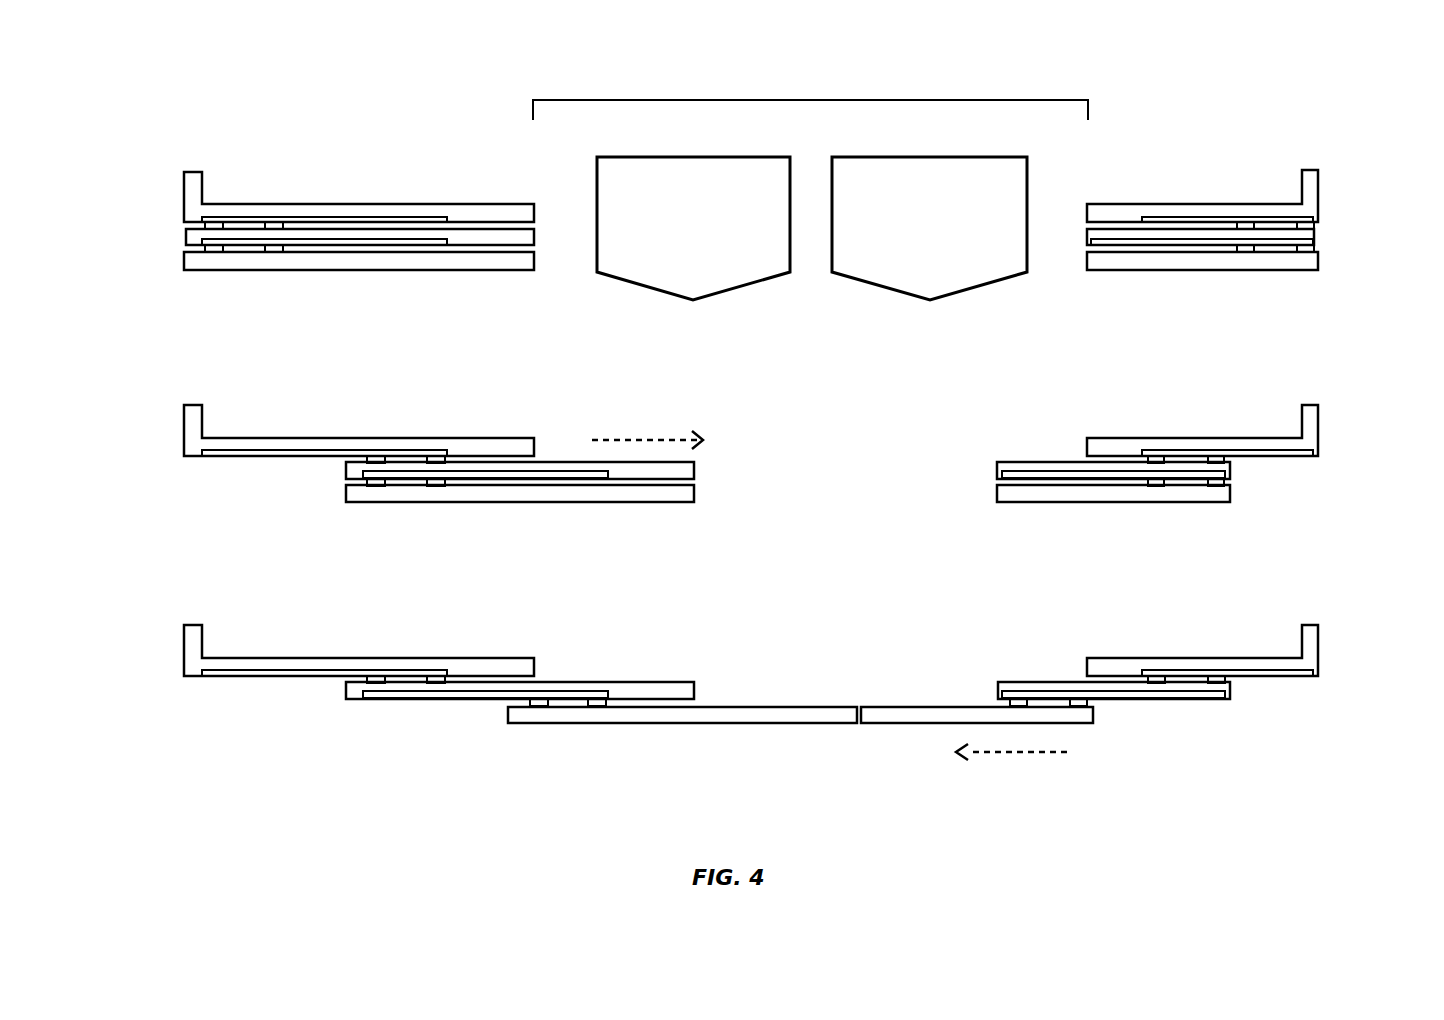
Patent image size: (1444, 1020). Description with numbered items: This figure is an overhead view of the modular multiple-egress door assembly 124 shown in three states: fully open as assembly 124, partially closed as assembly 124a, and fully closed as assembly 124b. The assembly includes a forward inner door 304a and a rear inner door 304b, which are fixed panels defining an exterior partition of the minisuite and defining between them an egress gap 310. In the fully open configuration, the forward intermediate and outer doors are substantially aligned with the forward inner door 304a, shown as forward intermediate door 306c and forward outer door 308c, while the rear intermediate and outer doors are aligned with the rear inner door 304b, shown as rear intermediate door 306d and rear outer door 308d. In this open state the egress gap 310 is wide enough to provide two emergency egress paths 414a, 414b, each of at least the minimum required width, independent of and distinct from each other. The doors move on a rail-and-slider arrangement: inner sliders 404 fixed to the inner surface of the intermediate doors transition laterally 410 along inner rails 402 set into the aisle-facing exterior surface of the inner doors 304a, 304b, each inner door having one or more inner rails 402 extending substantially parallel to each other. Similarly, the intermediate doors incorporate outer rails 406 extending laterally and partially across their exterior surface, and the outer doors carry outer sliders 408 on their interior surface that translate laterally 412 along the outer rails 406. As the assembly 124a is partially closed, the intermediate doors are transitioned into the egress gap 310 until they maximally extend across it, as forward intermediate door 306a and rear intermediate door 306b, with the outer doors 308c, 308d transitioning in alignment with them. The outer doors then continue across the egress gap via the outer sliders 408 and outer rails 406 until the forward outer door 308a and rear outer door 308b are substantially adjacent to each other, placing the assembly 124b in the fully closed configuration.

The modular multiple-egress door assembly 124 is at (125, 95).
The modular multiple-egress door assembly (partially closed) 124a is at (132, 384).
The modular multiple-egress door assembly (fully closed) 124b is at (132, 571).
The forward inner door 304a is at (257, 210).
The rear inner door 304b is at (1308, 208).
The forward intermediate door 306a is at (358, 469).
The rear intermediate door 306b is at (1222, 467).
The forward intermediate door (open position) 306c is at (193, 237).
The rear intermediate door (open position) 306d is at (1312, 235).
The forward outer door 308a is at (737, 715).
The rear outer door 308b is at (892, 715).
The forward outer door (open position) 308c is at (255, 260).
The rear outer door (open position) 308d is at (1285, 263).
The egress gap 310 is at (793, 100).
The inner rails 402 is at (298, 220).
The inner sliders 404 is at (1303, 220).
The outer rails 406 is at (358, 241).
The outer sliders 408 is at (1245, 247).
The lateral transition of inner sliders 410 is at (655, 438).
The lateral translation of outer sliders 412 is at (1000, 755).
The first emergency egress path 414a is at (660, 240).
The second emergency egress path 414b is at (900, 240).